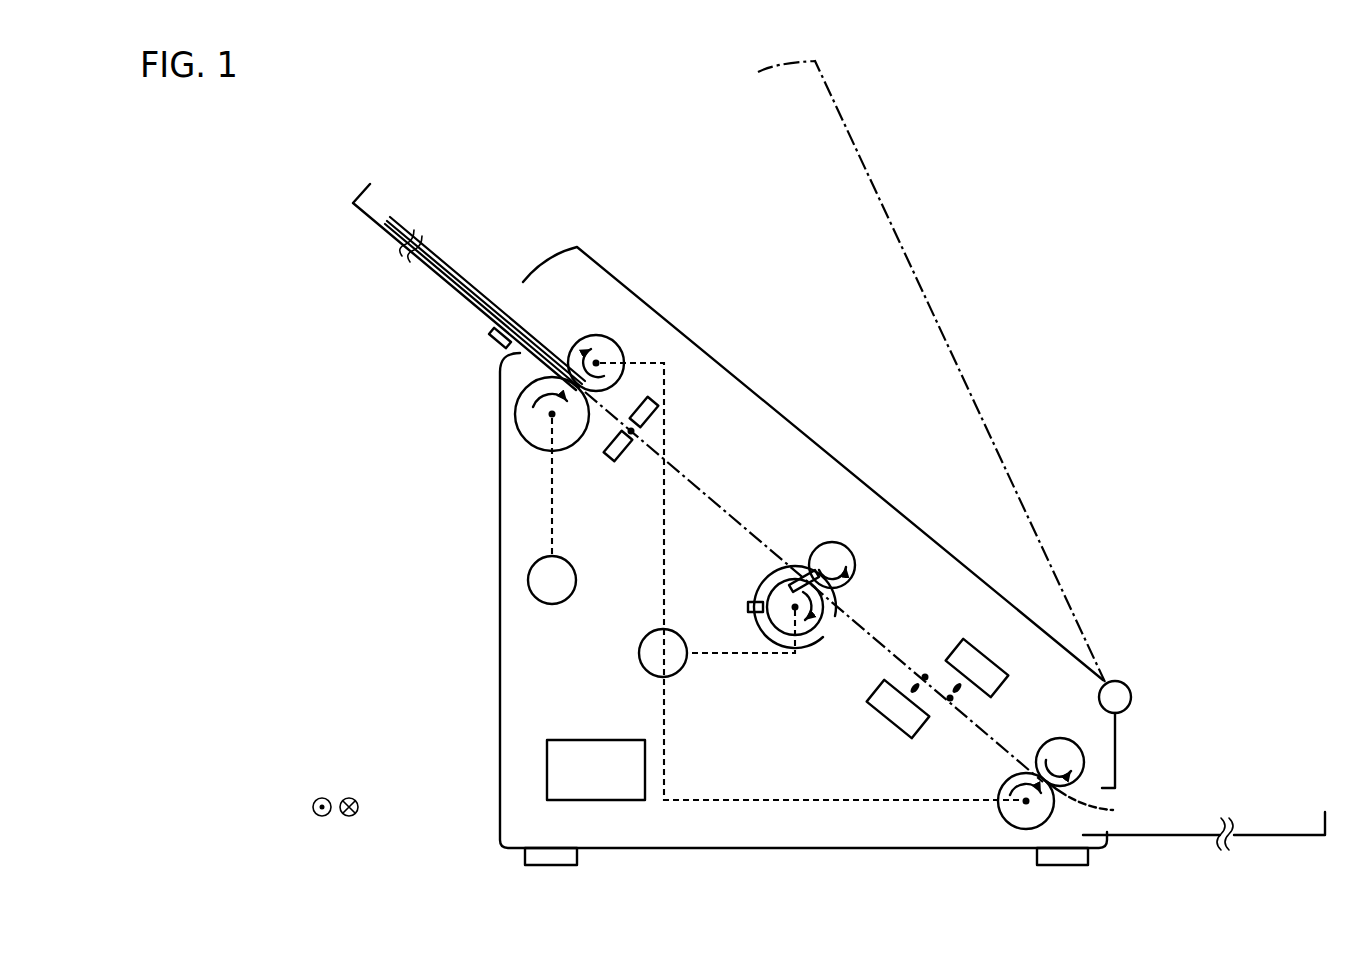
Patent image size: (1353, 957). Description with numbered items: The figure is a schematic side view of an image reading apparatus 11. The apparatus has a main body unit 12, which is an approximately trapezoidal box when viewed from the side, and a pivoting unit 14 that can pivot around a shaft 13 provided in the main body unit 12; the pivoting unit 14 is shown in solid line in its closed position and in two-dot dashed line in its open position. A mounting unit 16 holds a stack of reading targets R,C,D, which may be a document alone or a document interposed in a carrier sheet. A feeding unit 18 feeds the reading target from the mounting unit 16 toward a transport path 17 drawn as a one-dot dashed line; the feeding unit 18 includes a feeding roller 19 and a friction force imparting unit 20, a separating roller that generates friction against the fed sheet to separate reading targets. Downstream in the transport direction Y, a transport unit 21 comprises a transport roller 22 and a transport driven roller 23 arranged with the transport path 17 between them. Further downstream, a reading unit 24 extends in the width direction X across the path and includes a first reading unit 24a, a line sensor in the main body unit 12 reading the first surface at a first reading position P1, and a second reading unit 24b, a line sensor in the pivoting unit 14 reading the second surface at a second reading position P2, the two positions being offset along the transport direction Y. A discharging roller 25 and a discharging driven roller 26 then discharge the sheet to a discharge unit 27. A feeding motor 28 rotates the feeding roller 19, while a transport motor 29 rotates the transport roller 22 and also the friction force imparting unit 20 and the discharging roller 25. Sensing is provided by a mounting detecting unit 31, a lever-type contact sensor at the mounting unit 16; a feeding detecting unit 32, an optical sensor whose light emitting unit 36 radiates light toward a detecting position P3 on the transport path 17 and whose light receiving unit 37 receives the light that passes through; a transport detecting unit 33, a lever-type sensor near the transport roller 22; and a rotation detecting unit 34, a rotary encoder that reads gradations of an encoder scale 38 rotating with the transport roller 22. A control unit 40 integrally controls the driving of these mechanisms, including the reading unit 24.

The image reading apparatus 11 is at (320, 149).
The main body unit 12 is at (500, 532).
The shaft 13 is at (1131, 690).
The pivoting unit 14 is at (748, 388).
The mounting unit 16 is at (365, 215).
The transport path 17 is at (678, 466).
The feeding unit 18 is at (517, 445).
The feeding roller 19 is at (515, 412).
The friction force imparting unit 20 is at (594, 335).
The transport unit 21 is at (856, 510).
The transport roller 22 is at (830, 632).
The transport driven roller 23 is at (850, 545).
The reading unit 24 is at (938, 652).
The first reading unit 24a is at (879, 682).
The second reading unit 24b is at (953, 650).
The discharging roller 25 is at (1010, 777).
The discharging driven roller 26 is at (1057, 737).
The discharge unit 27 is at (1280, 835).
The feeding motor 28 is at (577, 578).
The transport motor 29 is at (639, 647).
The mounting detecting unit 31 is at (492, 345).
The feeding detecting unit 32 is at (622, 472).
The transport detecting unit 33 is at (810, 553).
The rotation detecting unit 34 is at (748, 602).
The light emitting unit 36 is at (612, 462).
The light receiving unit 37 is at (655, 428).
The encoder scale 38 is at (775, 568).
The control unit 40 is at (590, 740).
The first reading position P1 is at (927, 682).
The second reading position P2 is at (958, 696).
The detecting position P3 is at (640, 403).
The width direction X is at (363, 816).
The transport direction Y is at (750, 516).
The reading target, carrier sheet, document R,C,D is at (467, 248).